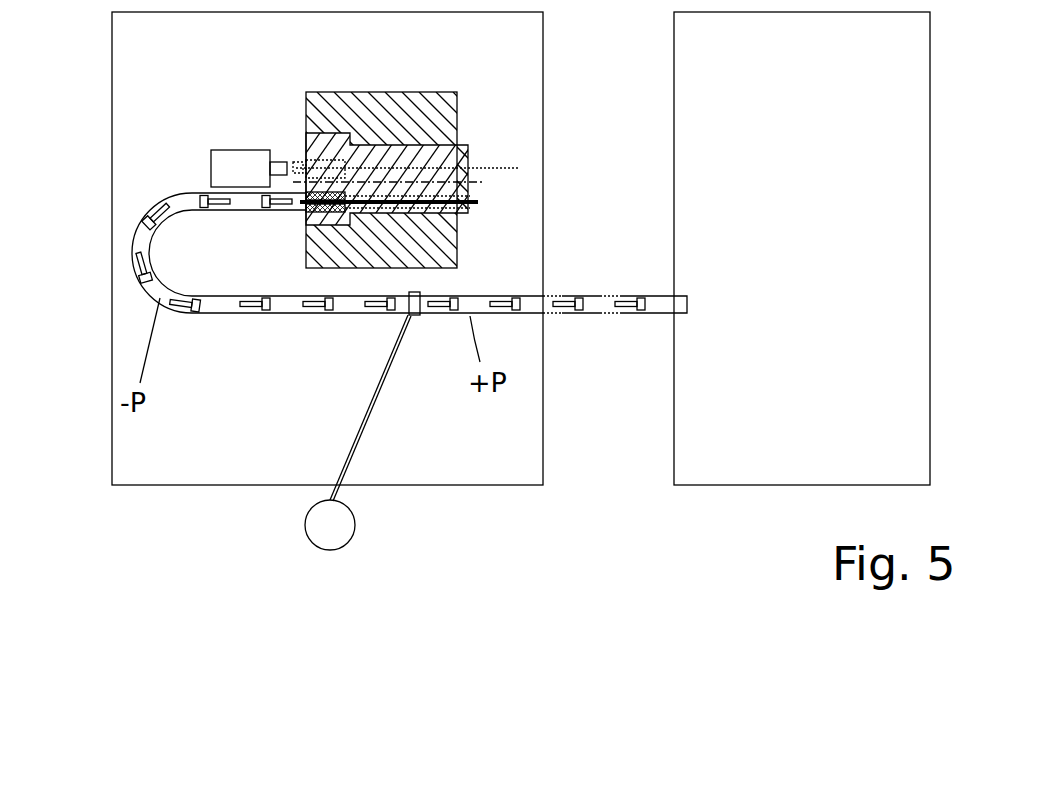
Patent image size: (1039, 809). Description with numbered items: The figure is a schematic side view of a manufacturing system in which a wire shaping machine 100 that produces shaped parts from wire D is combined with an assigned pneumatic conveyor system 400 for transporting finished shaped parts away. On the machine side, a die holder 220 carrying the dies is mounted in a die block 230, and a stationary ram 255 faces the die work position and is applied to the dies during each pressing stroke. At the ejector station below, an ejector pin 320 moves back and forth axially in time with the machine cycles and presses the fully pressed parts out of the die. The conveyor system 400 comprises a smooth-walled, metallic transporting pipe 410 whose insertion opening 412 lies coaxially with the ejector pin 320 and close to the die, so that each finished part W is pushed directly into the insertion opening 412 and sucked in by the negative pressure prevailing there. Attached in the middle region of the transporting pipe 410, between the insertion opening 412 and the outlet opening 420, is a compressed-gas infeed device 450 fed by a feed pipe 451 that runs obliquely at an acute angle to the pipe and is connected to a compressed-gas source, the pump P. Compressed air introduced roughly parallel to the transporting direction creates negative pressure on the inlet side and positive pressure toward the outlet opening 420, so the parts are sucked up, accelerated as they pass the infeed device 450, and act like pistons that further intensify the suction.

The wire shaping machine 100 is at (186, 62).
The die block 230 is at (362, 110).
The die holder 220 is at (416, 150).
The stationary ram 255 is at (235, 160).
The pneumatic conveyor system 400 is at (406, 292).
The transporting pipe 410 is at (463, 305).
The insertion opening 412 is at (273, 237).
The outlet opening 420 is at (687, 300).
The ejector pin 320 is at (326, 212).
The compressed-gas infeed device 450 is at (418, 338).
The feed pipe 451 is at (350, 450).
The workpiece W is at (295, 160).
The wire D is at (500, 165).
The pump P is at (330, 525).